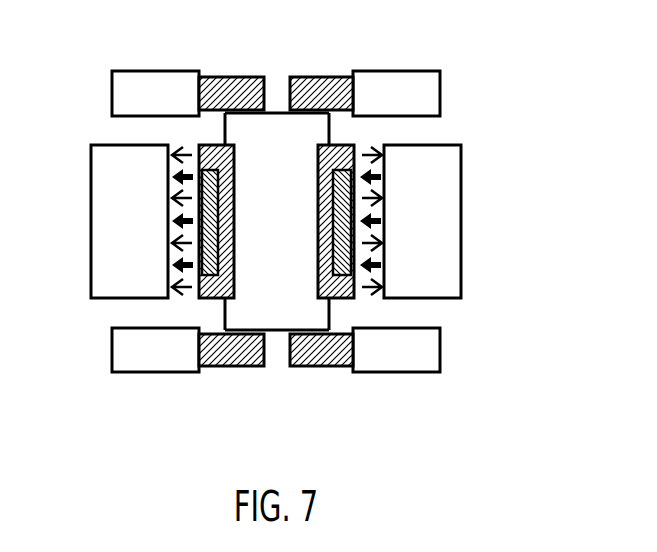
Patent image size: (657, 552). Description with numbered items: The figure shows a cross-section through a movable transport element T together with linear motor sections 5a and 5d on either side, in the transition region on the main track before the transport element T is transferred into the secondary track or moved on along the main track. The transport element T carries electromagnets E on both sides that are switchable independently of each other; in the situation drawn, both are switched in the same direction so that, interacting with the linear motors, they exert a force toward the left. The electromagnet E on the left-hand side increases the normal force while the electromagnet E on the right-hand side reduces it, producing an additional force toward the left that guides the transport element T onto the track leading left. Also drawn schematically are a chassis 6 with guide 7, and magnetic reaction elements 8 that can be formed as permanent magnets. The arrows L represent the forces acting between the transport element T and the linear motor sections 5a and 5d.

The linear motor section 5a is at (96, 183).
The linear motor section 5d is at (461, 180).
The chassis 6 is at (232, 82).
The guide 7 is at (132, 82).
The magnetic reaction element 8 is at (200, 145).
The electromagnet E is at (215, 182).
The load / force direction L is at (172, 221).
The transport element T is at (270, 297).